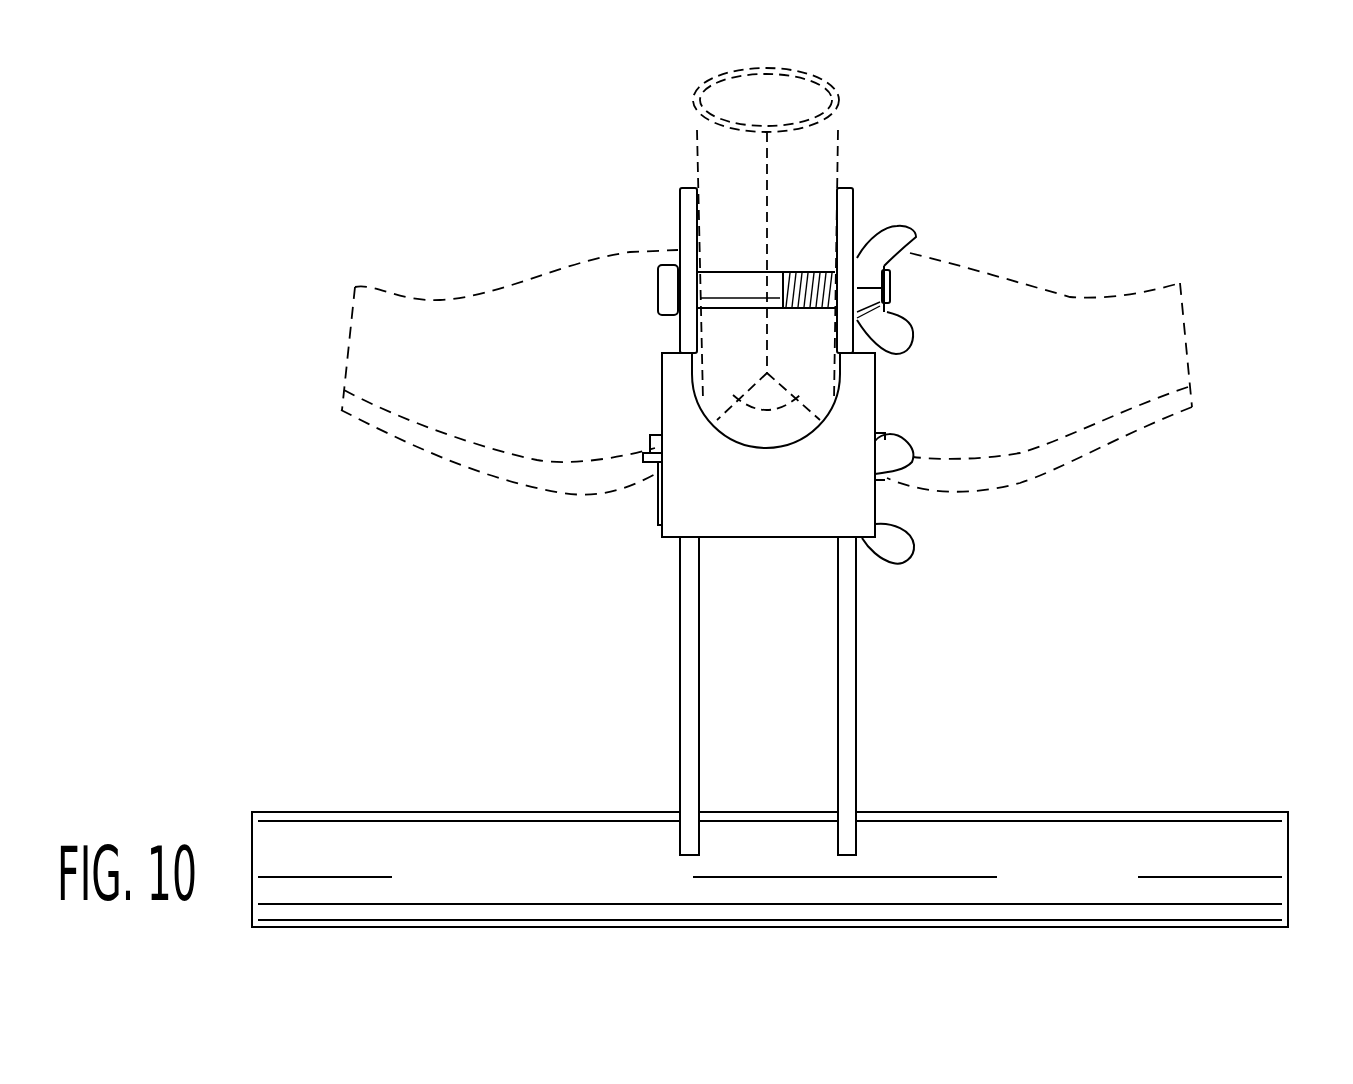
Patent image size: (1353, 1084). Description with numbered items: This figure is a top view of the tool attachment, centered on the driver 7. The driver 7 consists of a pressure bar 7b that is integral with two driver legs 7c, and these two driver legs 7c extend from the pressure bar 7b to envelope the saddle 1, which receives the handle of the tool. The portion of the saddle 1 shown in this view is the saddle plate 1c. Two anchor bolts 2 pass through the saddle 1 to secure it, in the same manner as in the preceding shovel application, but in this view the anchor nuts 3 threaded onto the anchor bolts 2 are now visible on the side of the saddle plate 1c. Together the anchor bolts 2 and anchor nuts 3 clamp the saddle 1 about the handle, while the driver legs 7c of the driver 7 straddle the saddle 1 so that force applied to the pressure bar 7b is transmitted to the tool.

The saddle 1 is at (670, 538).
The saddle plate 1c is at (655, 530).
The anchor bolt 2 is at (658, 293).
The anchor nut 3 is at (918, 238).
The driver 7 is at (1288, 848).
The pressure bar 7b is at (881, 812).
The driver leg 7c is at (681, 702).